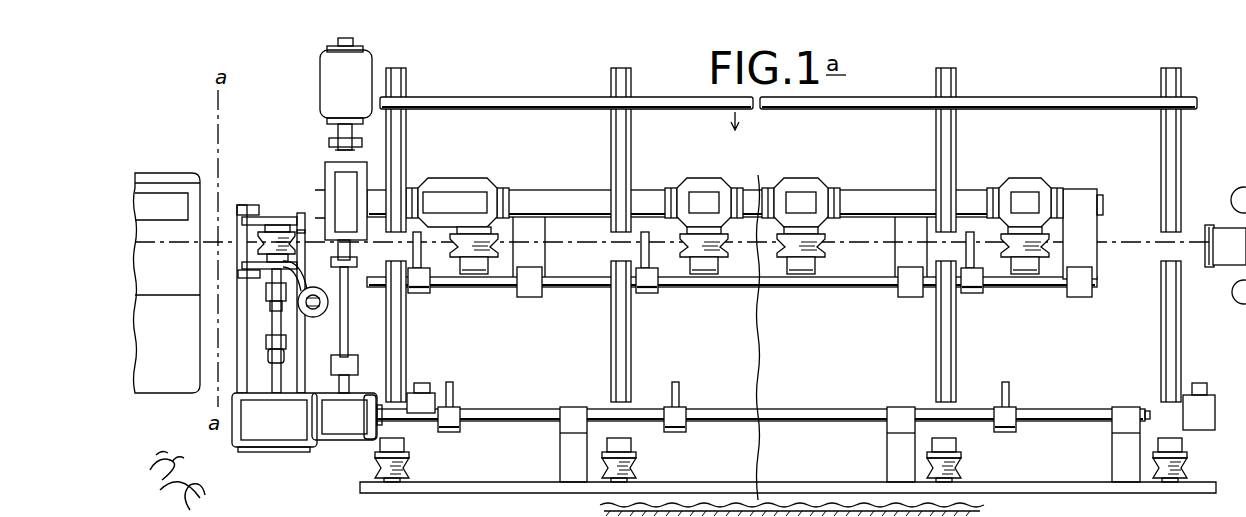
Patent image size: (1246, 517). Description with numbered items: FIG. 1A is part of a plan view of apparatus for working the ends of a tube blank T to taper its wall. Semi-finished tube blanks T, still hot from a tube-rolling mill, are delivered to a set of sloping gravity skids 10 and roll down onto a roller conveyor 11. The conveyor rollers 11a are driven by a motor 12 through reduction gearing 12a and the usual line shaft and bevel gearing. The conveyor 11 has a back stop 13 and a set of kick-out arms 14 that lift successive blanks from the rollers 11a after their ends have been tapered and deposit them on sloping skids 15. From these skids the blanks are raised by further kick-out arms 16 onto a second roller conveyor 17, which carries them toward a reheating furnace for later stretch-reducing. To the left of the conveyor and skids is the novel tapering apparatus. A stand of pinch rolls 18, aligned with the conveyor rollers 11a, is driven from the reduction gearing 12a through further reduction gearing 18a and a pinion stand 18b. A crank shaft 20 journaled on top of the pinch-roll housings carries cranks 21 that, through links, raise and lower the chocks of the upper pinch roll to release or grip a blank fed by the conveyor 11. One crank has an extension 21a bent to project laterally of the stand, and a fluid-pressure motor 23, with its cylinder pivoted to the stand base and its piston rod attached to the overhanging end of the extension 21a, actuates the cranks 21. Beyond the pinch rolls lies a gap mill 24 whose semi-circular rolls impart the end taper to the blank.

The sloping gravity skids 10 is at (398, 128).
The roller conveyor 11 is at (558, 246).
The conveyor rollers 11a is at (476, 253).
The motor 12 is at (354, 89).
The reduction gearing 12a is at (350, 178).
The back stop 13 is at (1228, 228).
The kick-out arms 14 is at (417, 256).
The sloping skids 15 is at (396, 333).
The kick-out arms 16 is at (453, 390).
The roller conveyor 17 is at (428, 454).
The stand of pinch rolls 18 is at (301, 232).
The further reduction gearing 18a is at (347, 430).
The pinion stand 18b is at (270, 428).
The crank shaft 20 is at (240, 226).
The cranks 21 is at (262, 224).
The extension 21a is at (296, 275).
The fluid-pressure motor 23 is at (307, 317).
The gap mill 24 is at (176, 348).
The tube blank T is at (880, 102).